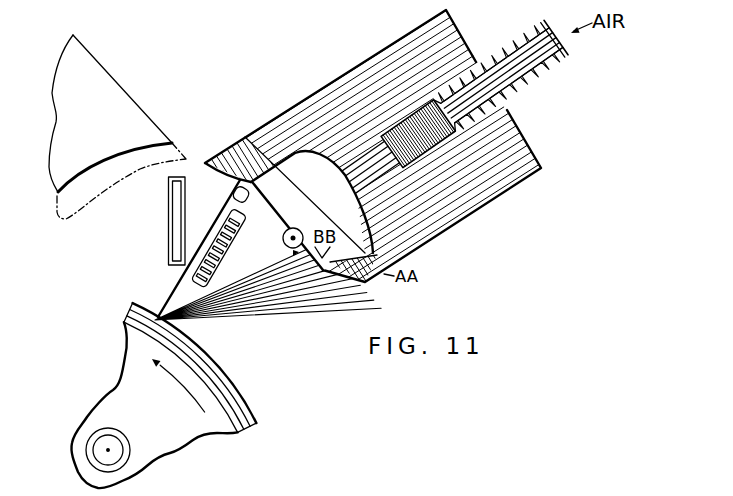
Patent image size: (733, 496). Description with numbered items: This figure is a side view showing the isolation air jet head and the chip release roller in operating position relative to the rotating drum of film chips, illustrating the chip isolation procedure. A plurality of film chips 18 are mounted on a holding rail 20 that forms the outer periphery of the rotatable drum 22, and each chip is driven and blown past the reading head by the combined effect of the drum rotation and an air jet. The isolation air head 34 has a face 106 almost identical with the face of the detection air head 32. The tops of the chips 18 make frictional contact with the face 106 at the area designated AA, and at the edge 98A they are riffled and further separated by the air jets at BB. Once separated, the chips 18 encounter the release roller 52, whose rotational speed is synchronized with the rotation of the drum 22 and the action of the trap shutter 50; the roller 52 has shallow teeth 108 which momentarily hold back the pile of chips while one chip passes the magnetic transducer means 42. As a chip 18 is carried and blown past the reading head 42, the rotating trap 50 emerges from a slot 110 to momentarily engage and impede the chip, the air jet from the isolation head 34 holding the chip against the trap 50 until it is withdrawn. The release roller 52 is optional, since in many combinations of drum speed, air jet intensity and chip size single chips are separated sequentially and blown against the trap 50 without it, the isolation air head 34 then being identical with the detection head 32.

The film chips 18 is at (302, 315).
The holding rail 20 is at (256, 418).
The rotatable drum 22 is at (176, 431).
The detection air head 32 is at (103, 107).
The isolation air head 34 is at (387, 60).
The magnetic transducer means 42 is at (234, 191).
The trap shutter 50 is at (177, 208).
The release roller 52 is at (295, 253).
The edge 98A is at (350, 266).
The face 106 is at (277, 211).
The shallow teeth 108 is at (318, 221).
The slot 110 is at (169, 246).